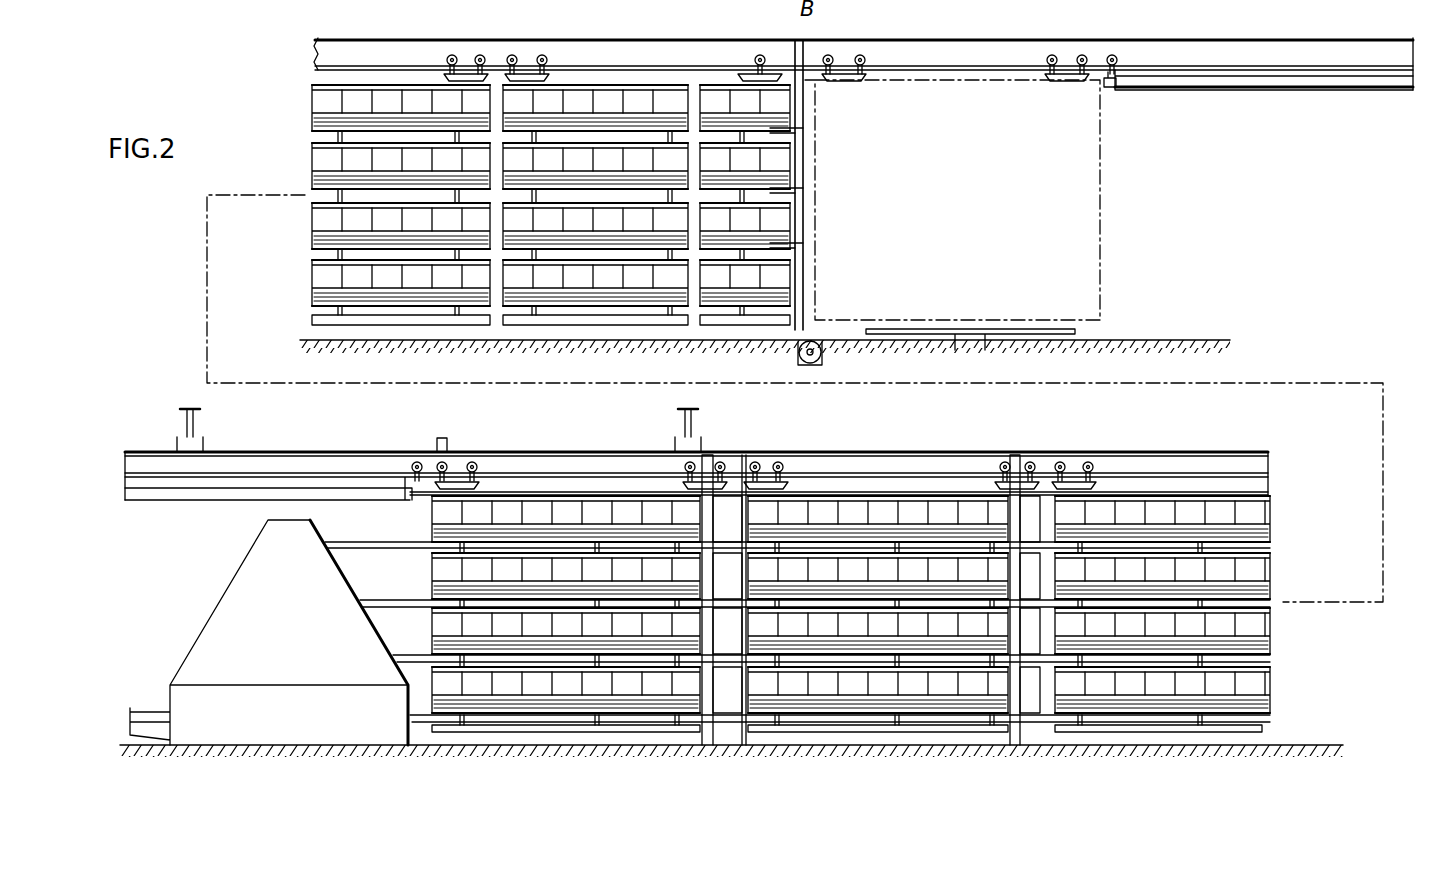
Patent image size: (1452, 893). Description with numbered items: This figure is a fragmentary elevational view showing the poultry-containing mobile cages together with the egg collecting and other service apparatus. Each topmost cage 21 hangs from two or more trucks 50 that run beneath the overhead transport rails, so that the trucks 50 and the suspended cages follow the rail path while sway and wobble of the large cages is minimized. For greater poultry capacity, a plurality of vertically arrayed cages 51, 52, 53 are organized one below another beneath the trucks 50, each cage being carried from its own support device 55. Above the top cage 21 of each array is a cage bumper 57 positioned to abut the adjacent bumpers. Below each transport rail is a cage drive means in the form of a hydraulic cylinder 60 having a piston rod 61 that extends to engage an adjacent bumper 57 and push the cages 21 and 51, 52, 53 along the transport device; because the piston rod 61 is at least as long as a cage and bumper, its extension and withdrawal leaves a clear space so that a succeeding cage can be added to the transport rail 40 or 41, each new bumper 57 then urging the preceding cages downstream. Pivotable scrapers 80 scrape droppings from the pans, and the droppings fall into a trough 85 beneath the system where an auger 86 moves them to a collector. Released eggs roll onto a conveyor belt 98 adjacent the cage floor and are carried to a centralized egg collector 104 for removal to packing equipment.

The cage 21 is at (888, 492).
The transport rail 40 is at (1305, 52).
The transport rail 41 is at (1370, 52).
The truck 50 is at (517, 73).
The cage 51 is at (910, 560).
The cage 52 is at (912, 623).
The cage 53 is at (928, 683).
The support device 55 is at (1085, 545).
The cage bumper 57 is at (383, 85).
The hydraulic cylinder 60 is at (1296, 90).
The piston rod 61 is at (1105, 94).
The pivotable scraper 80 is at (805, 245).
The trough 85 is at (822, 346).
The auger 86 is at (812, 341).
The conveyor belt 98 is at (412, 715).
The centralized egg collector 104 is at (300, 608).